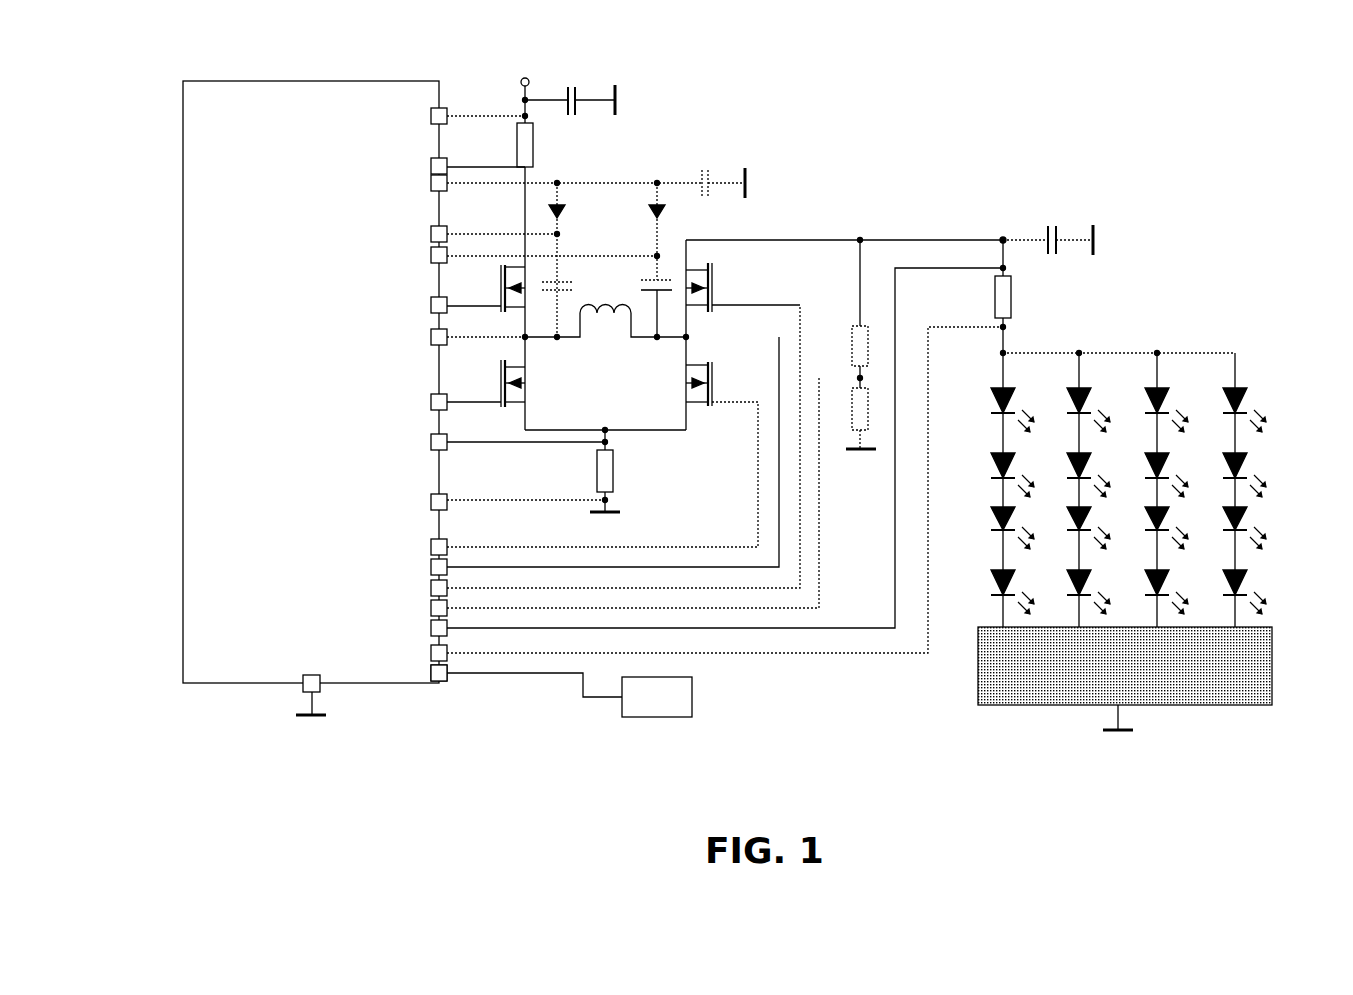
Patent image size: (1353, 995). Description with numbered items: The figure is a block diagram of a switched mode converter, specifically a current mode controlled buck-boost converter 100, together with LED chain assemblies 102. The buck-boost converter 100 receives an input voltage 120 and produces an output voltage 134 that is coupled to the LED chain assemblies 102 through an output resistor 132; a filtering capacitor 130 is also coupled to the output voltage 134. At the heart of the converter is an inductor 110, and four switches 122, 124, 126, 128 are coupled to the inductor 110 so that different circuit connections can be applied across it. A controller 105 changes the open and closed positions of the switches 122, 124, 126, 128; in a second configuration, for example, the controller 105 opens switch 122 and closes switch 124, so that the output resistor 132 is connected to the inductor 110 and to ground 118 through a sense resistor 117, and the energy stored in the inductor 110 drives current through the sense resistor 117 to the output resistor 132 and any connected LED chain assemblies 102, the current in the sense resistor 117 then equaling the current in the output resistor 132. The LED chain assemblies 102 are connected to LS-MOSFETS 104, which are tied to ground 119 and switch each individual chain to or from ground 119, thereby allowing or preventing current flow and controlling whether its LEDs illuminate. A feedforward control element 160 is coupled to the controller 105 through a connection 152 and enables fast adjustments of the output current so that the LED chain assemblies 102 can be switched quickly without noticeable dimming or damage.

The current mode controlled buck-boost converter 100 is at (1162, 122).
The LED chain assemblies 102 is at (1008, 352).
The LS-MOSFETS 104 is at (1275, 672).
The controller 105 is at (323, 405).
The inductor 110 is at (590, 312).
The sense resistor 117 is at (615, 472).
The ground 118 is at (610, 514).
The ground 119 is at (1120, 733).
The input voltage 120 is at (516, 53).
The switch 122 is at (500, 287).
The switch 124 is at (500, 374).
The switch 126 is at (715, 280).
The switch 128 is at (712, 410).
The filtering capacitor 130 is at (1053, 228).
The output resistor 132 is at (1011, 306).
The output voltage 134 is at (1003, 240).
The connection 152 is at (443, 685).
The feedforward control element 160 is at (569, 695).